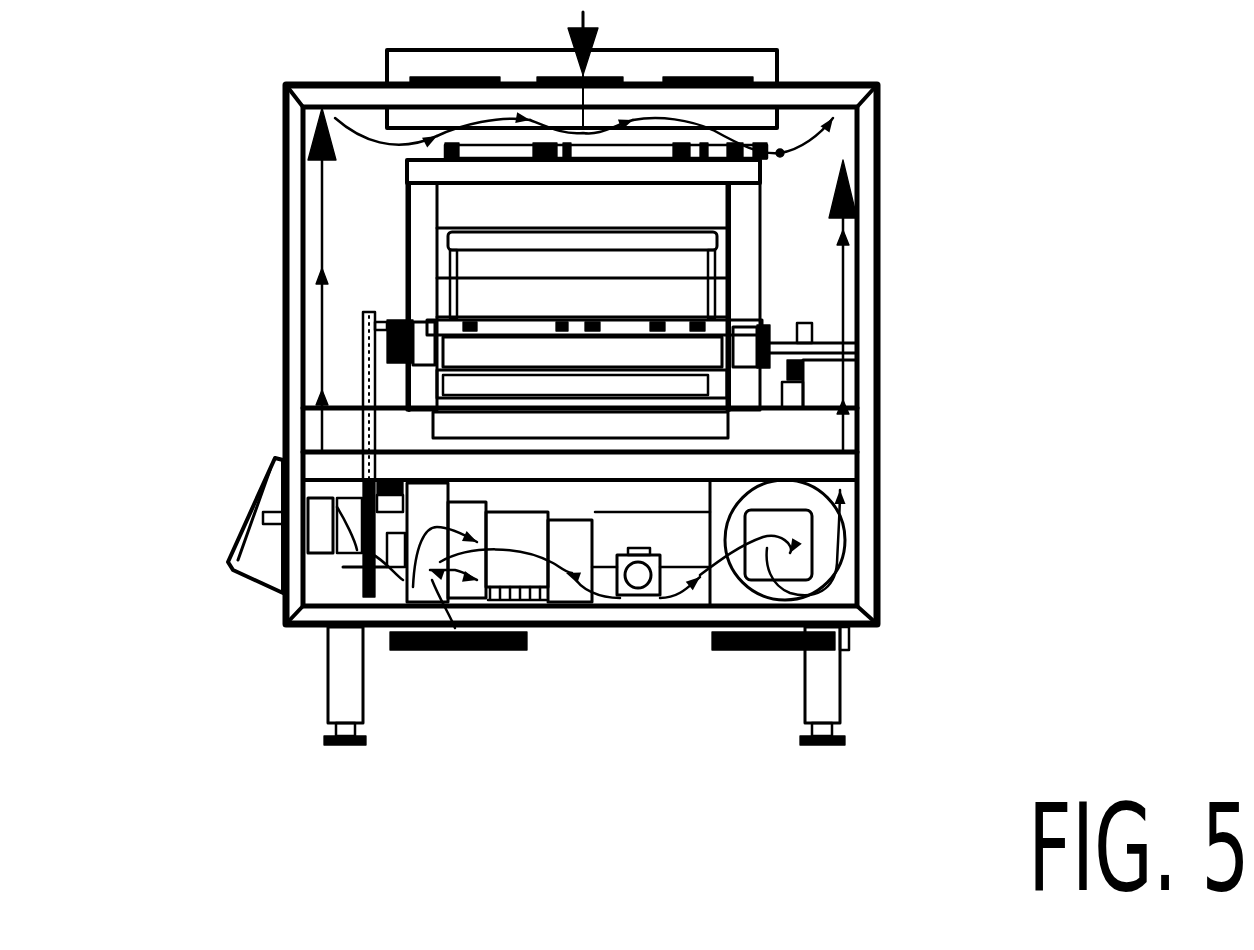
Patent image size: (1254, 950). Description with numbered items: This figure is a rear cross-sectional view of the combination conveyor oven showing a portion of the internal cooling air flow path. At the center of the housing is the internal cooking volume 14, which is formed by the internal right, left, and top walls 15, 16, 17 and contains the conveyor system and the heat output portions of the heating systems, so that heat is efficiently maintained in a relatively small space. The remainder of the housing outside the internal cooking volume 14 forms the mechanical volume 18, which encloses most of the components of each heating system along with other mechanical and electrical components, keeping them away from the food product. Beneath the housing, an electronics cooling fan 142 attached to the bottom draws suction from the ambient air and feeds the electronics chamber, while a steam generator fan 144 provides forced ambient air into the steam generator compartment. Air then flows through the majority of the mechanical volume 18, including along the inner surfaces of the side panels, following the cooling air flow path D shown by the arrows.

The internal cooking volume 14 is at (610, 300).
The internal right wall 15 is at (423, 245).
The internal left wall 16 is at (742, 298).
The internal top wall 17 is at (713, 175).
The mechanical volume 18 is at (358, 280).
The cooling air flow path D is at (320, 353).
The electronics cooling fan 142 is at (540, 645).
The steam generator fan 144 is at (713, 652).